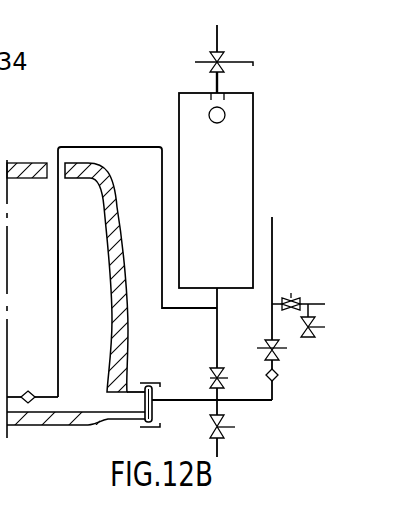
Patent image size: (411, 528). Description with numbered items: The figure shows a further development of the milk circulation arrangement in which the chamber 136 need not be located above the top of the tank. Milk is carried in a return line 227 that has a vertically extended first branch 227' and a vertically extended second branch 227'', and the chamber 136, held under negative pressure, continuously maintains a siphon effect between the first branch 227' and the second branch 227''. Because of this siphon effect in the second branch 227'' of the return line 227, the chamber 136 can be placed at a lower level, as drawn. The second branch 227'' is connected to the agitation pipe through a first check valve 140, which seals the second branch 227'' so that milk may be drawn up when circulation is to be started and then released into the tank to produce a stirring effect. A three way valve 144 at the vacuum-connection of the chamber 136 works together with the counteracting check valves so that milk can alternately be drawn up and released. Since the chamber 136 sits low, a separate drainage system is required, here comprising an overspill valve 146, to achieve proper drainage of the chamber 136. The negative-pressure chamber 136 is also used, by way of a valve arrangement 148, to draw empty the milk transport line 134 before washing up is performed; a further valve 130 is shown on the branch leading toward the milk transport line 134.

The return line 227 is at (137, 256).
The first branch 227' is at (82, 276).
The second branch 227'' is at (91, 275).
The first check valve 140 is at (26, 390).
The chamber 136 is at (233, 167).
The three way valve 144 is at (228, 62).
The overspill valve 146 is at (214, 378).
The valve arrangement 148 is at (270, 344).
The valve 130 is at (289, 311).
The milk transport line 134 is at (325, 304).